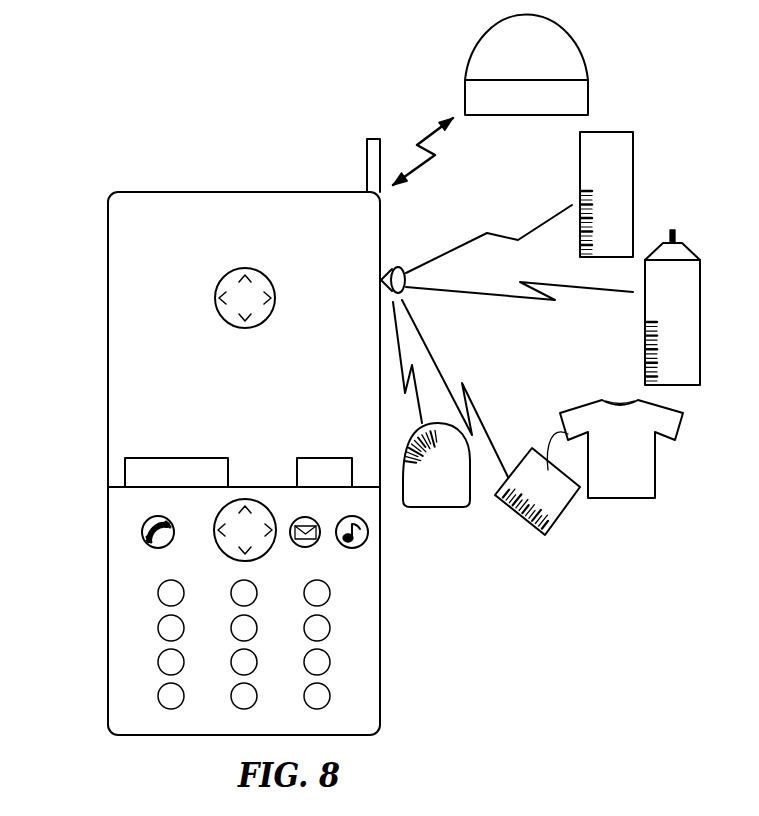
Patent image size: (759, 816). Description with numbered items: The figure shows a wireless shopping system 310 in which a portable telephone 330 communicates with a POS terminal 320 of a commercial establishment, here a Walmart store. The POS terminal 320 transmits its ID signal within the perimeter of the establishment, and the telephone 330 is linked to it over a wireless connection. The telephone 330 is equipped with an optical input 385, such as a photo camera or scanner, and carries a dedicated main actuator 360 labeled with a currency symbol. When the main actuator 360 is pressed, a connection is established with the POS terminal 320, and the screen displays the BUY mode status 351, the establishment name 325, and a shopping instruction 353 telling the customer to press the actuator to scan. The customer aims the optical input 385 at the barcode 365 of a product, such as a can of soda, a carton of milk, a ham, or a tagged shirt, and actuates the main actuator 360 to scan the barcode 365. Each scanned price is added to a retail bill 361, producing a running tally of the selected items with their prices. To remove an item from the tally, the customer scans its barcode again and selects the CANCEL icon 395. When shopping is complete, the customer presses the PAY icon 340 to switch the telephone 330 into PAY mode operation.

The system 310 is at (417, 143).
The POS terminal 320 is at (588, 95).
The establishment name 325 is at (170, 249).
The portable telephone 330 is at (108, 613).
The PAY icon 340 is at (297, 458).
The BUY mode status 351 is at (212, 216).
The shopping instruction 353 is at (142, 301).
The main actuator 360 is at (214, 522).
The retail bill 361 is at (165, 422).
The barcode 365 is at (633, 152).
The optical input 385 is at (401, 268).
The CANCEL icon 395 is at (125, 465).